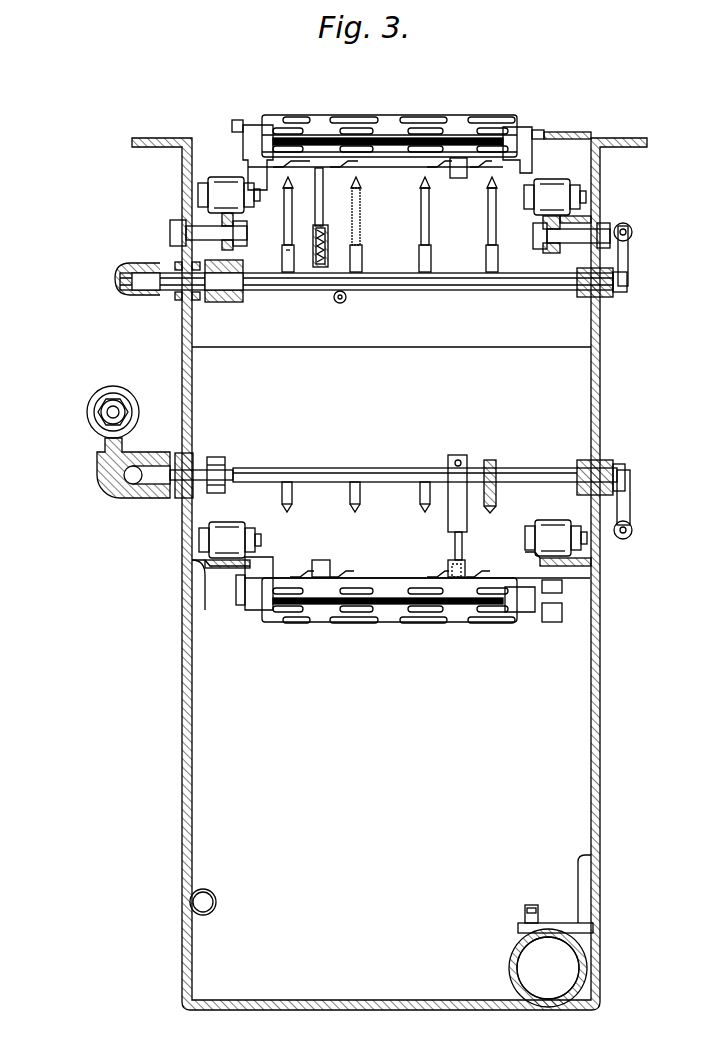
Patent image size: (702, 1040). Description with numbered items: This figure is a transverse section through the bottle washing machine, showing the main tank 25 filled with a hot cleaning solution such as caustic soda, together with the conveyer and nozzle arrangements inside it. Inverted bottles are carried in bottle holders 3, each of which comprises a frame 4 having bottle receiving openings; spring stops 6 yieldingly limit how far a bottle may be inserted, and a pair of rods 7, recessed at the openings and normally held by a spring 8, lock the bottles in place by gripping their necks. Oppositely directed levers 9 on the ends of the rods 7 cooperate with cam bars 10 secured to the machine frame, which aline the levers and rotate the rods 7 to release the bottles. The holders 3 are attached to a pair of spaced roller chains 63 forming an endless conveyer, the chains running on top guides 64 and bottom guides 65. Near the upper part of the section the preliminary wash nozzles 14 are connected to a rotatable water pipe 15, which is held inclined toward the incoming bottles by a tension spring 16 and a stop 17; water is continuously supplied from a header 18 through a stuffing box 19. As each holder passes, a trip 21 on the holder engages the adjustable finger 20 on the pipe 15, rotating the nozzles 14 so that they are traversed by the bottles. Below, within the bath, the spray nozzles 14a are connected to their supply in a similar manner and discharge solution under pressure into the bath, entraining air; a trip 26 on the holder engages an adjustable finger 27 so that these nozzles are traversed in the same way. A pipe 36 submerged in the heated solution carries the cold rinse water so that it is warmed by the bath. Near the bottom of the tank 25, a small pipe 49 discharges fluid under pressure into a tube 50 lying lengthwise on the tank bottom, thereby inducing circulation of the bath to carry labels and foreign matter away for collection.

The bottle holder 3 is at (318, 120).
The frame 4 is at (327, 612).
The spring stop 6 is at (291, 165).
The rod 7 is at (383, 134).
The spring 8 is at (243, 140).
The lever 9 is at (540, 134).
The cam bar 10 is at (560, 134).
The nozzle 14 is at (284, 221).
The spray nozzle 14a is at (292, 500).
The rotatable water pipe 15 is at (406, 289).
The tension spring 16 is at (628, 228).
The stop 17 is at (578, 292).
The header 18 is at (140, 284).
The stuffing box 19 is at (225, 300).
The adjustable finger 20 is at (330, 231).
The trip 21 is at (322, 178).
The main tank 25 is at (389, 574).
The trip 26 is at (458, 178).
The adjustable finger 27 is at (464, 548).
The pipe 36 is at (216, 902).
The small pipe 49 is at (106, 412).
The tube 50 is at (575, 962).
The roller chain 63 is at (226, 186).
The top guide 64 is at (222, 222).
The bottom guide 65 is at (192, 564).